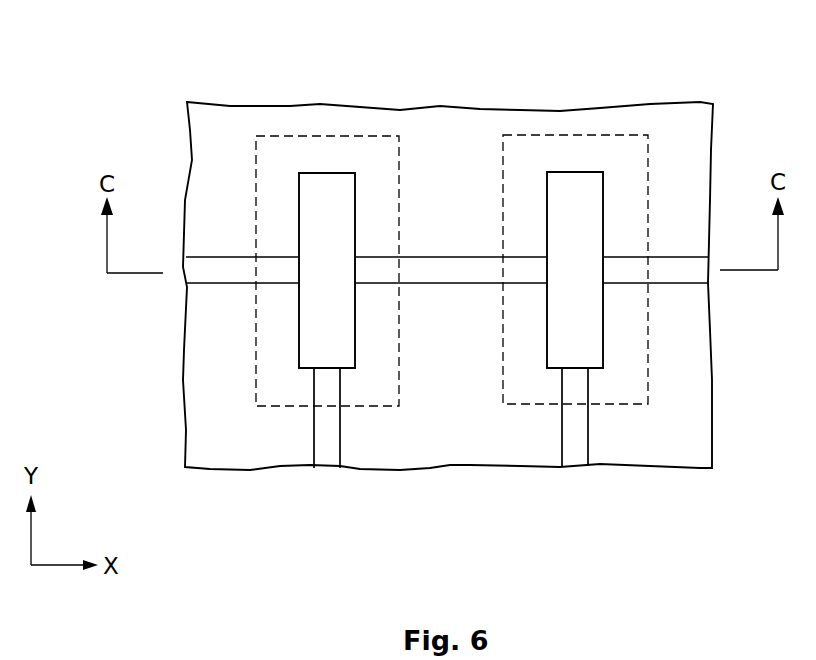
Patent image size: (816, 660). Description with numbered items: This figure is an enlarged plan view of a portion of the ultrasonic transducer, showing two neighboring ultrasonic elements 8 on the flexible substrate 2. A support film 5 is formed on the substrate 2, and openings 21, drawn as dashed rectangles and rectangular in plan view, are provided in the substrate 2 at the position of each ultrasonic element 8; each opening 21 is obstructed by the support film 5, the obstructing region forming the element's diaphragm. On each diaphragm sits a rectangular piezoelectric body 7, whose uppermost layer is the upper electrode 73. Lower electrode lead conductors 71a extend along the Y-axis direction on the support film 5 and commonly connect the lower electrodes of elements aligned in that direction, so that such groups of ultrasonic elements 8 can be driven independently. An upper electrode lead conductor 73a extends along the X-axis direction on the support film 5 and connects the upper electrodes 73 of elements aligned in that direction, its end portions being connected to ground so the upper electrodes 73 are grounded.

The substrate 2 is at (483, 250).
The support film 5 is at (683, 137).
The piezoelectric body 7 is at (456, 199).
The ultrasonic element 8 is at (330, 164).
The opening 21 is at (269, 408).
The lower electrode lead conductor 71a is at (327, 445).
The upper electrode 73 is at (317, 193).
The upper electrode lead conductor 73a is at (232, 275).